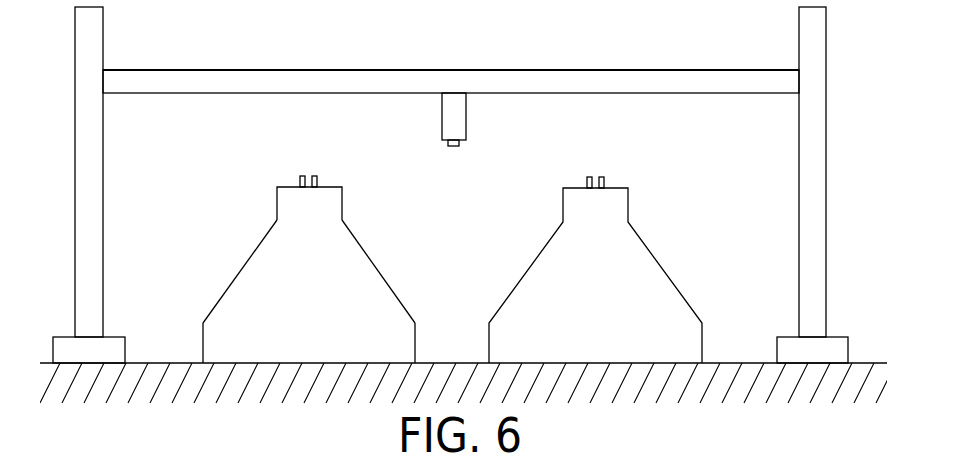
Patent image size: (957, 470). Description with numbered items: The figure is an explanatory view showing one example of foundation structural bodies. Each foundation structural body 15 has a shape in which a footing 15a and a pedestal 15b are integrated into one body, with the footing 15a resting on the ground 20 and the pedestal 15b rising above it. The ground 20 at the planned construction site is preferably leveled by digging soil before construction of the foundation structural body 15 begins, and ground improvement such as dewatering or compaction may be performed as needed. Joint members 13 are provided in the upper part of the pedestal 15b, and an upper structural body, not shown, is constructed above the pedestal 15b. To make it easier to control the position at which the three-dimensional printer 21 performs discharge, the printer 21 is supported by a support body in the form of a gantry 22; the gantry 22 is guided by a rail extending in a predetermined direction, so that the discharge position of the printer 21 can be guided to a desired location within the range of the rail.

The joint member 13 is at (298, 183).
The foundation structural body 15 is at (263, 275).
The footing 15a is at (285, 322).
The pedestal 15b is at (248, 257).
The ground 20 is at (863, 362).
The 3D printer 21 is at (458, 123).
The gantry 22 is at (315, 76).